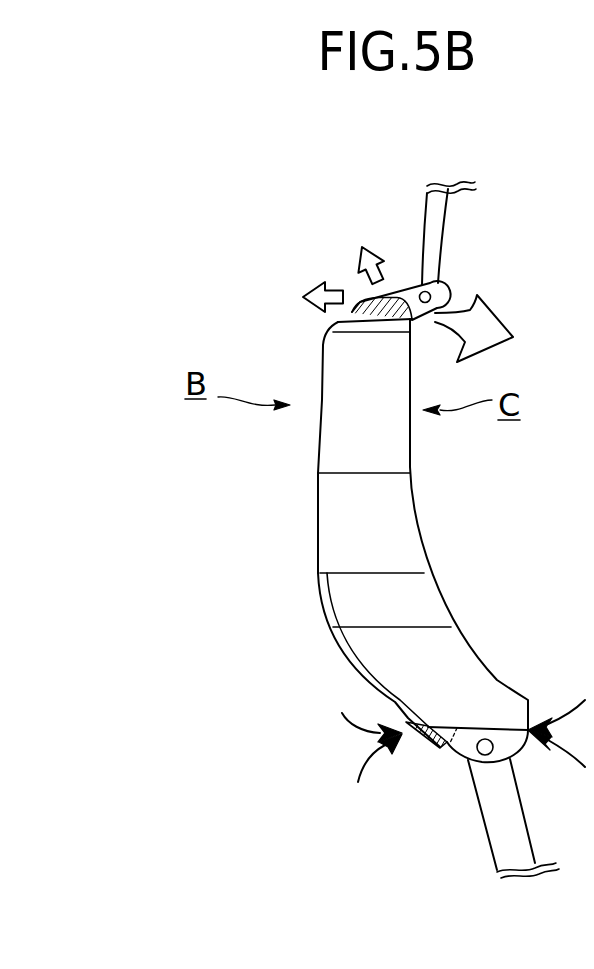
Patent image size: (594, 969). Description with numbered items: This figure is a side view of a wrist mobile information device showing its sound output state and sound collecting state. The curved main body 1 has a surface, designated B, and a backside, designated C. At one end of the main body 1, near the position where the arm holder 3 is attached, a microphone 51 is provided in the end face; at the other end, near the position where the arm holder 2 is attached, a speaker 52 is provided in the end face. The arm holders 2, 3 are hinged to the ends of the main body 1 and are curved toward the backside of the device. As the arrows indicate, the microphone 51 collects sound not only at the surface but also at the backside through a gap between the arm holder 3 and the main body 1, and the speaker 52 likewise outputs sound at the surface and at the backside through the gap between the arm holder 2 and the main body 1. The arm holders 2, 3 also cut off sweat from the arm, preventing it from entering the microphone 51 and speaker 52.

The main body 1 is at (400, 505).
The arm holder 2 is at (437, 234).
The arm holder 3 is at (517, 837).
The microphone 51 is at (432, 750).
The speaker 52 is at (365, 298).